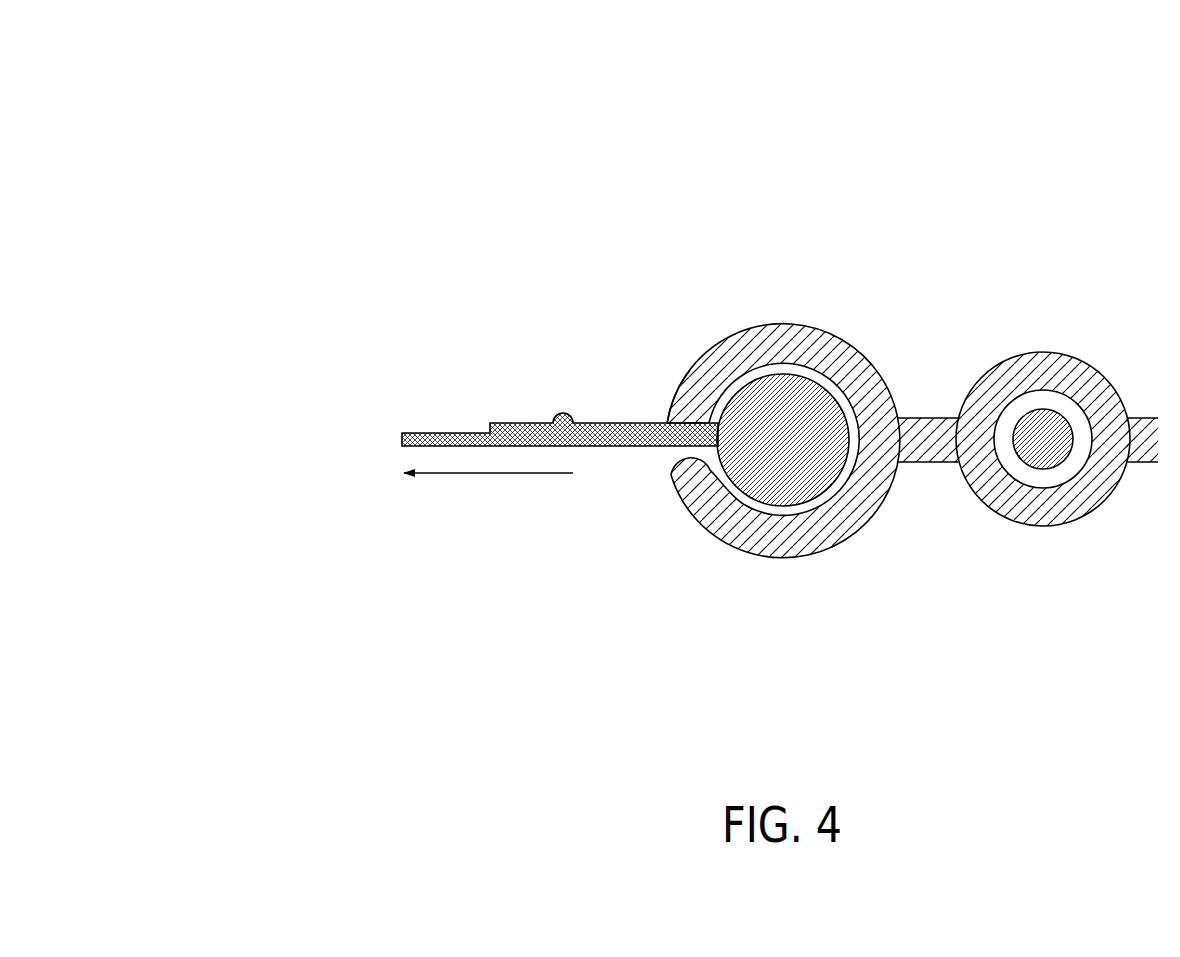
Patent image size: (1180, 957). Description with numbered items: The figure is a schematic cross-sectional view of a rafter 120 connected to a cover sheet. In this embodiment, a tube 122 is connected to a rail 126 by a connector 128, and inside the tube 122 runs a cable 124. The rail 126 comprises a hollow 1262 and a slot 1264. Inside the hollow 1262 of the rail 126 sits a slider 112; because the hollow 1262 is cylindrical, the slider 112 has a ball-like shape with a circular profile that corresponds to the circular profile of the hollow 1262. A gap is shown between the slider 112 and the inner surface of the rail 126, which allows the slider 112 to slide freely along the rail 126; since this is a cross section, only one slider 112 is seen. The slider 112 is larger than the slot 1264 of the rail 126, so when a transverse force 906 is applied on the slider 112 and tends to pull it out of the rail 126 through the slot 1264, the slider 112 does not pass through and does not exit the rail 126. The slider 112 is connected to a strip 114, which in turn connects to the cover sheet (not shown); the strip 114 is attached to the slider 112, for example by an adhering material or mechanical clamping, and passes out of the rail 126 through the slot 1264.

The rafter 120 is at (574, 178).
The slider 112 is at (788, 385).
The strip 114 is at (400, 440).
The tube 122 is at (1044, 527).
The cable 124 is at (1038, 413).
The rail 126 is at (780, 557).
The hollow 1262 is at (717, 538).
The slot 1264 is at (668, 423).
The connector 128 is at (928, 468).
The transverse force 906 is at (495, 474).